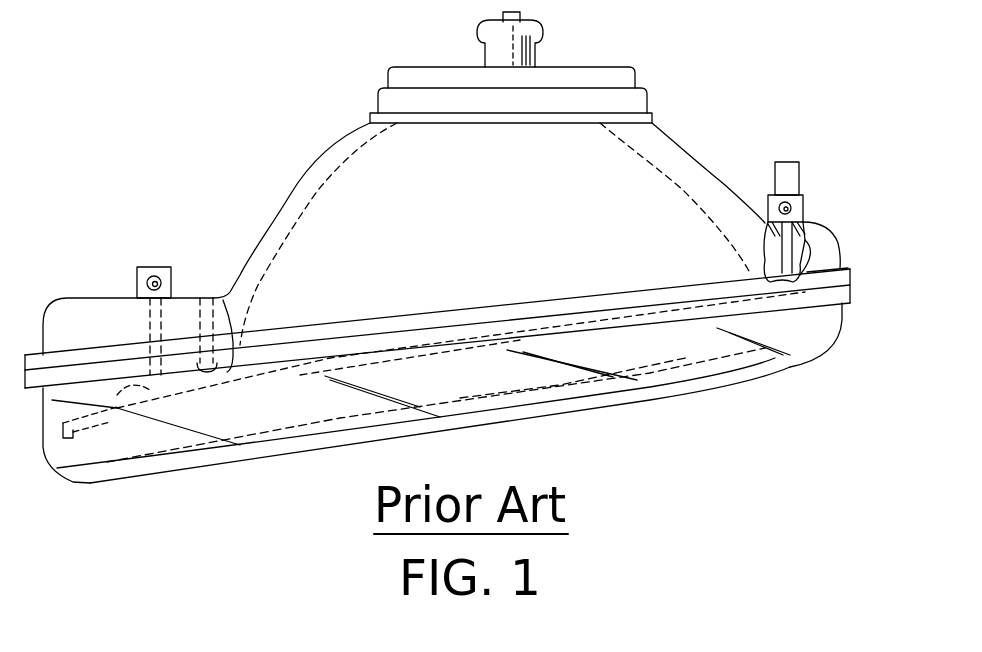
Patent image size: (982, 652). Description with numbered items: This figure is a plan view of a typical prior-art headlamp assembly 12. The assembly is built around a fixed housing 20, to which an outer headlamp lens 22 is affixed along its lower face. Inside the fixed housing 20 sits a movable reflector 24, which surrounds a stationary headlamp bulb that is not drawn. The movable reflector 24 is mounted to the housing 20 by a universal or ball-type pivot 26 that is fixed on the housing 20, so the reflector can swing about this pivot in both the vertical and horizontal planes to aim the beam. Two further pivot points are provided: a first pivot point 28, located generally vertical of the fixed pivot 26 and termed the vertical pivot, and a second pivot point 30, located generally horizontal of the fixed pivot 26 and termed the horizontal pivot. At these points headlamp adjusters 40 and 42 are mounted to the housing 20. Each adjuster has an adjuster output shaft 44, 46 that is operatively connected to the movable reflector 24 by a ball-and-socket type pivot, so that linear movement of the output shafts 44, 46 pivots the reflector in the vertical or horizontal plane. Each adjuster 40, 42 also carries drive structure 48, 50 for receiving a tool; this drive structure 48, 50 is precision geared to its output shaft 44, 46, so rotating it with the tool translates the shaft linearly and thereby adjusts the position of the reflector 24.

The headlamp assembly 12 is at (329, 76).
The fixed housing 20 is at (257, 238).
The outer headlamp lens 22 is at (678, 396).
The movable reflector 24 is at (320, 180).
The ball-type pivot 26 is at (230, 367).
The first pivot point 28 is at (112, 407).
The second pivot point 30 is at (840, 250).
The headlamp adjuster 40 is at (148, 265).
The headlamp adjuster 42 is at (805, 208).
The adjuster output shaft 44 is at (150, 327).
The adjuster output shaft 46 is at (823, 227).
The drive structure 48 is at (145, 268).
The drive structure 50 is at (768, 223).